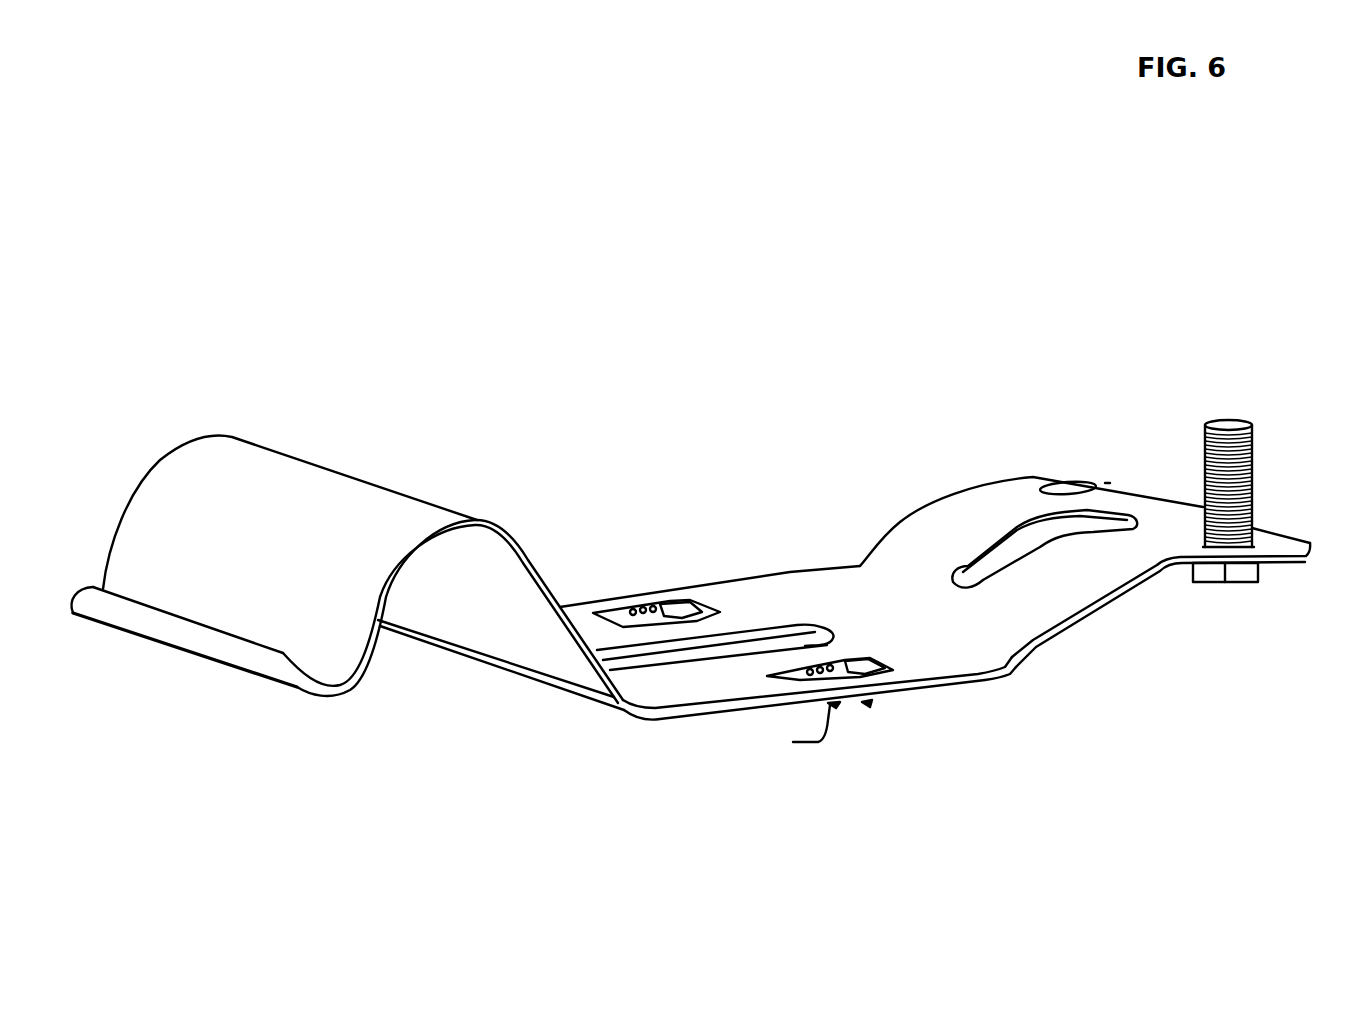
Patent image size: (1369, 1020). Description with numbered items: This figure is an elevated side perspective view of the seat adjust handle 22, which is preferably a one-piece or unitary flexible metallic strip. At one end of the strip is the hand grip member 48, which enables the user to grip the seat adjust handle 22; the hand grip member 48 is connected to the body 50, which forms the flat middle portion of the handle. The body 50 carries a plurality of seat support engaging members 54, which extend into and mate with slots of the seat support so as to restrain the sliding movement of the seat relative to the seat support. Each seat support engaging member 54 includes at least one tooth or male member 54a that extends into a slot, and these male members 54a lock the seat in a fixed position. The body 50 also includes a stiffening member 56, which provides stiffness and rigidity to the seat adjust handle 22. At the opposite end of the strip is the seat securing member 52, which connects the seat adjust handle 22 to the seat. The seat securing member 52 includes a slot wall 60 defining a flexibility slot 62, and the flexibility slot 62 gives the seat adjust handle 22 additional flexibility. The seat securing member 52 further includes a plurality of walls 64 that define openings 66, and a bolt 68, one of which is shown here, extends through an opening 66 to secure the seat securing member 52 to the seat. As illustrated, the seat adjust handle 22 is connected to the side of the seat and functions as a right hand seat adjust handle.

The seat adjust handle 22 is at (475, 245).
The hand grip member 48 is at (178, 646).
The body 50 is at (695, 722).
The seat securing member 52 is at (1138, 588).
The seat support engaging member 54 is at (666, 588).
The male member 54a is at (870, 703).
The stiffening member 56 is at (763, 621).
The slot wall 60 is at (988, 560).
The flexibility slot 62 is at (1012, 556).
The wall 64 is at (1105, 483).
The opening 66 is at (1068, 484).
The bolt 68 is at (1258, 480).